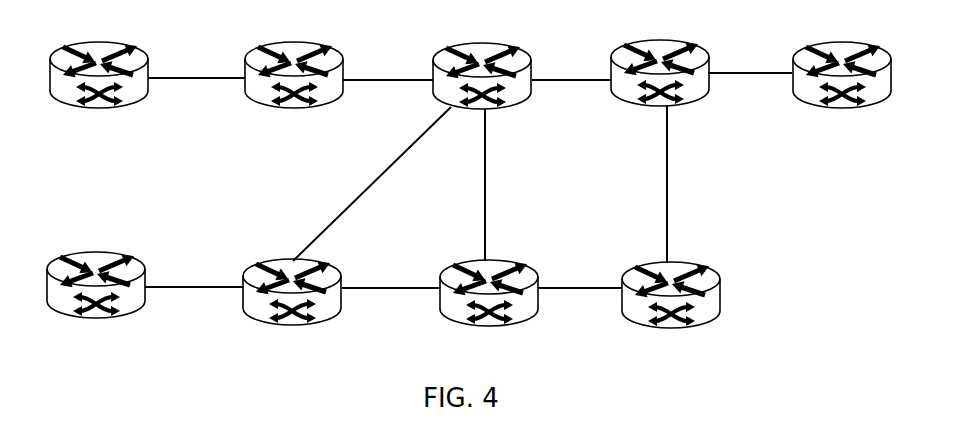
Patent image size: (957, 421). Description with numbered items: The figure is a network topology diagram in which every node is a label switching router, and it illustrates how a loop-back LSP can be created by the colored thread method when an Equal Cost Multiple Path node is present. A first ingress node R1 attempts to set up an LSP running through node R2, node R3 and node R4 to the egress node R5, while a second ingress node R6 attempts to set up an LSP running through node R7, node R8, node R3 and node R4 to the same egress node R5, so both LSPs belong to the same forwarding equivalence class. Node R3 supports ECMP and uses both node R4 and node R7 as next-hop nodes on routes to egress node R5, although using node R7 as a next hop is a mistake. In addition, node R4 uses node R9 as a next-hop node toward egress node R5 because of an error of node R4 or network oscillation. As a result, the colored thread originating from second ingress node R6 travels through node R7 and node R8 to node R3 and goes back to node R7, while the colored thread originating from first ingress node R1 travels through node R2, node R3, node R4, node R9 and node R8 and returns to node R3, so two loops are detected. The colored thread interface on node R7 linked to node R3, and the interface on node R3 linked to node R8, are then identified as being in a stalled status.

The first ingress node R1 is at (99, 90).
The node R2 is at (294, 90).
The ECMP supporting node R3 is at (482, 91).
The node R4 is at (660, 88).
The egress node R5 is at (842, 88).
The second ingress node R6 is at (96, 299).
The node R7 is at (292, 305).
The node R8 is at (489, 304).
The node R9 is at (671, 307).